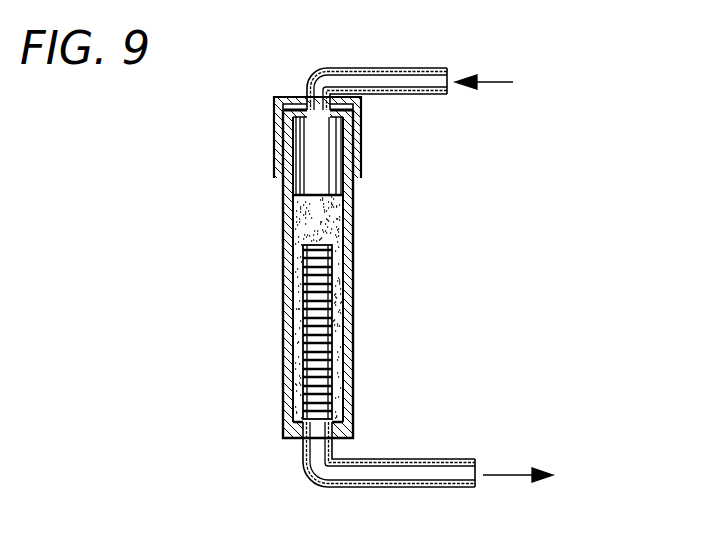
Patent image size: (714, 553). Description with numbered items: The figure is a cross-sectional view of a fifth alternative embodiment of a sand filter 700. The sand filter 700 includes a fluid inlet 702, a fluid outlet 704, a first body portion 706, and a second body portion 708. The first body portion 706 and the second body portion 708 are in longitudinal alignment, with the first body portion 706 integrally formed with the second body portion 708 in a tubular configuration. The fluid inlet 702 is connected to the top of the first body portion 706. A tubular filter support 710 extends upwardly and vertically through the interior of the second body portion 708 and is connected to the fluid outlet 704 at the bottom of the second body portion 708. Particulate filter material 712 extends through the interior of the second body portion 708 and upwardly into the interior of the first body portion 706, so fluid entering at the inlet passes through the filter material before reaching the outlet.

The sand filter 700 is at (445, 250).
The fluid inlet 702 is at (312, 76).
The fluid outlet 704 is at (308, 475).
The first body portion 706 is at (357, 186).
The second body portion 708 is at (348, 410).
The tubular filter support 710 is at (332, 382).
The particulate filter material 712 is at (298, 232).